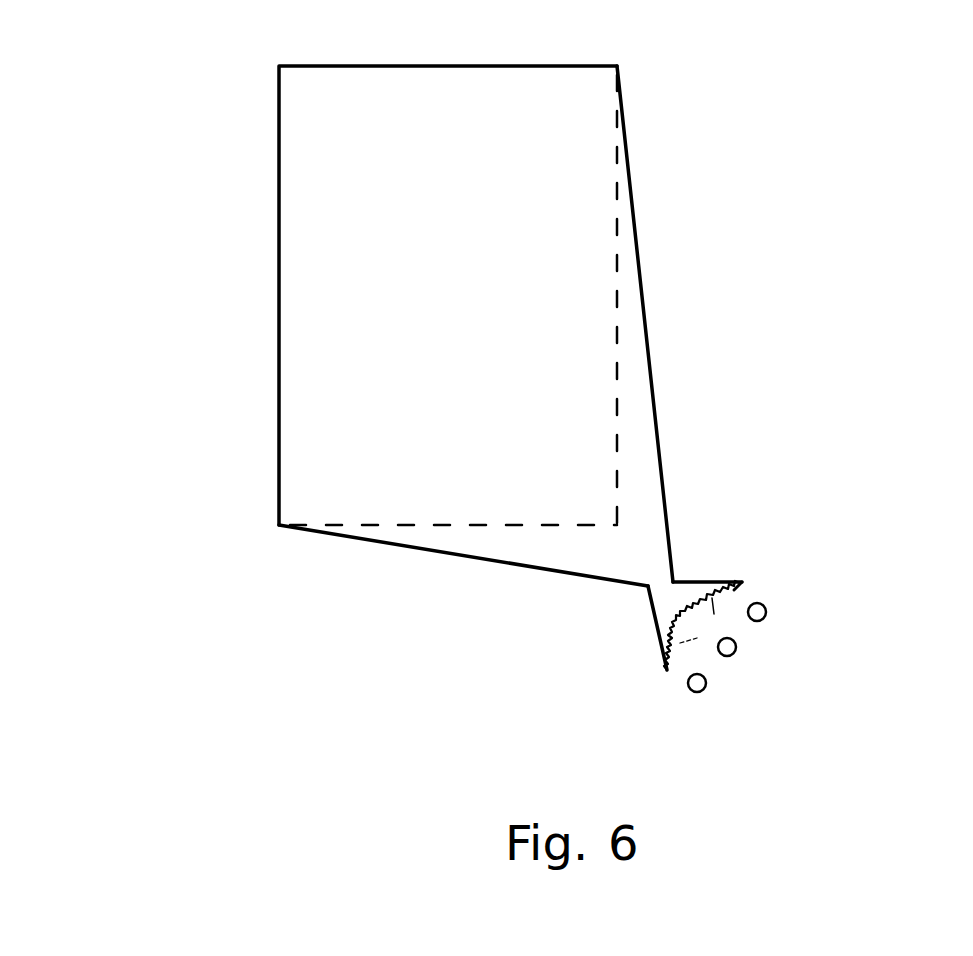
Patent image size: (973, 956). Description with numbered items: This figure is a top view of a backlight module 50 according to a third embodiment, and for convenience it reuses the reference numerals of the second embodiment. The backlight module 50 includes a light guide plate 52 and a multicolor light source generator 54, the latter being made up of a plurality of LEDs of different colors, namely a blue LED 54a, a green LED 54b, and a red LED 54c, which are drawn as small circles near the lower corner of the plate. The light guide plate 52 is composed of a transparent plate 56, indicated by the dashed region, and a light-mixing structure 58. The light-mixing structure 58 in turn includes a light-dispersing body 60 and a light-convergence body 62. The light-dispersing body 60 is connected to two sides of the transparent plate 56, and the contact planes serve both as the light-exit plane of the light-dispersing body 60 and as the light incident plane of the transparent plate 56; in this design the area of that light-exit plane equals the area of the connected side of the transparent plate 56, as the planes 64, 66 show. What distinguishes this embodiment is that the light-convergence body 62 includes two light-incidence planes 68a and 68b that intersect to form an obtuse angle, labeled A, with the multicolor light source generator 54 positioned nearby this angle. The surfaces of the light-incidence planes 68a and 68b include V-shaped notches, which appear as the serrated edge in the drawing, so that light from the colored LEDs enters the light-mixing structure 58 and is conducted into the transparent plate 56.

The backlight module 50 is at (740, 93).
The light guide plate 52 is at (290, 174).
The multicolor light source generator 54 is at (908, 663).
The blue LED 54a is at (704, 690).
The green LED 54b is at (734, 653).
The red LED 54c is at (764, 618).
The transparent plate 56 is at (457, 307).
The light-mixing structure 58 is at (742, 436).
The light-dispersing body 60 is at (638, 460).
The light-convergence body 62 is at (695, 583).
The plane 64 is at (330, 523).
The plane 66 is at (617, 335).
The light-incidence plane 68a is at (676, 630).
The light-incidence plane 68b is at (728, 587).